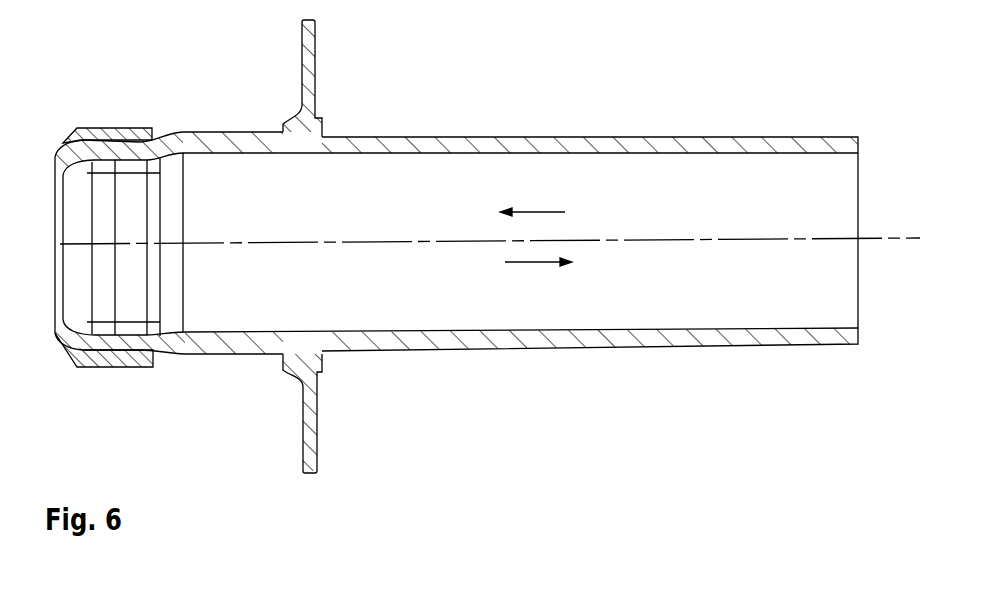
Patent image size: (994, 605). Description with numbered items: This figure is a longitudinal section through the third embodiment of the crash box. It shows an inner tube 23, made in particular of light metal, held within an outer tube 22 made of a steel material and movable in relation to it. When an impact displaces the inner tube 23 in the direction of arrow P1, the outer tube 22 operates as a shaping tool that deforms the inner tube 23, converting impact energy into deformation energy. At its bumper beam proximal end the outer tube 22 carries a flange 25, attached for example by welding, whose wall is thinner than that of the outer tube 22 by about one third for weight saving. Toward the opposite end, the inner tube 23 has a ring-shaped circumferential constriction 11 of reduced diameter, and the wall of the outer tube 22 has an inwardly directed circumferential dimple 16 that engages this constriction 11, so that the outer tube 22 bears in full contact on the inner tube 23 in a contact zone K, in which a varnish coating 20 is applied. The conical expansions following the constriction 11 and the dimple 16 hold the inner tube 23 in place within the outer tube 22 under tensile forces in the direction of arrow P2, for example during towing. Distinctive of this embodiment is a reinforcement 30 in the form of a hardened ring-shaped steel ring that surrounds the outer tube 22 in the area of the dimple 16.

The constriction 11 is at (112, 332).
The circumferential dimple 16 is at (107, 130).
The varnish coating 20 is at (213, 150).
The outer tube 22 is at (210, 97).
The inner tube 23 is at (623, 137).
The flange 25 is at (315, 55).
The reinforcement 30 is at (123, 130).
The contact zone K is at (203, 350).
The arrow indicating impact direction P1 is at (532, 200).
The arrow indicating tensile force direction P2 is at (538, 276).